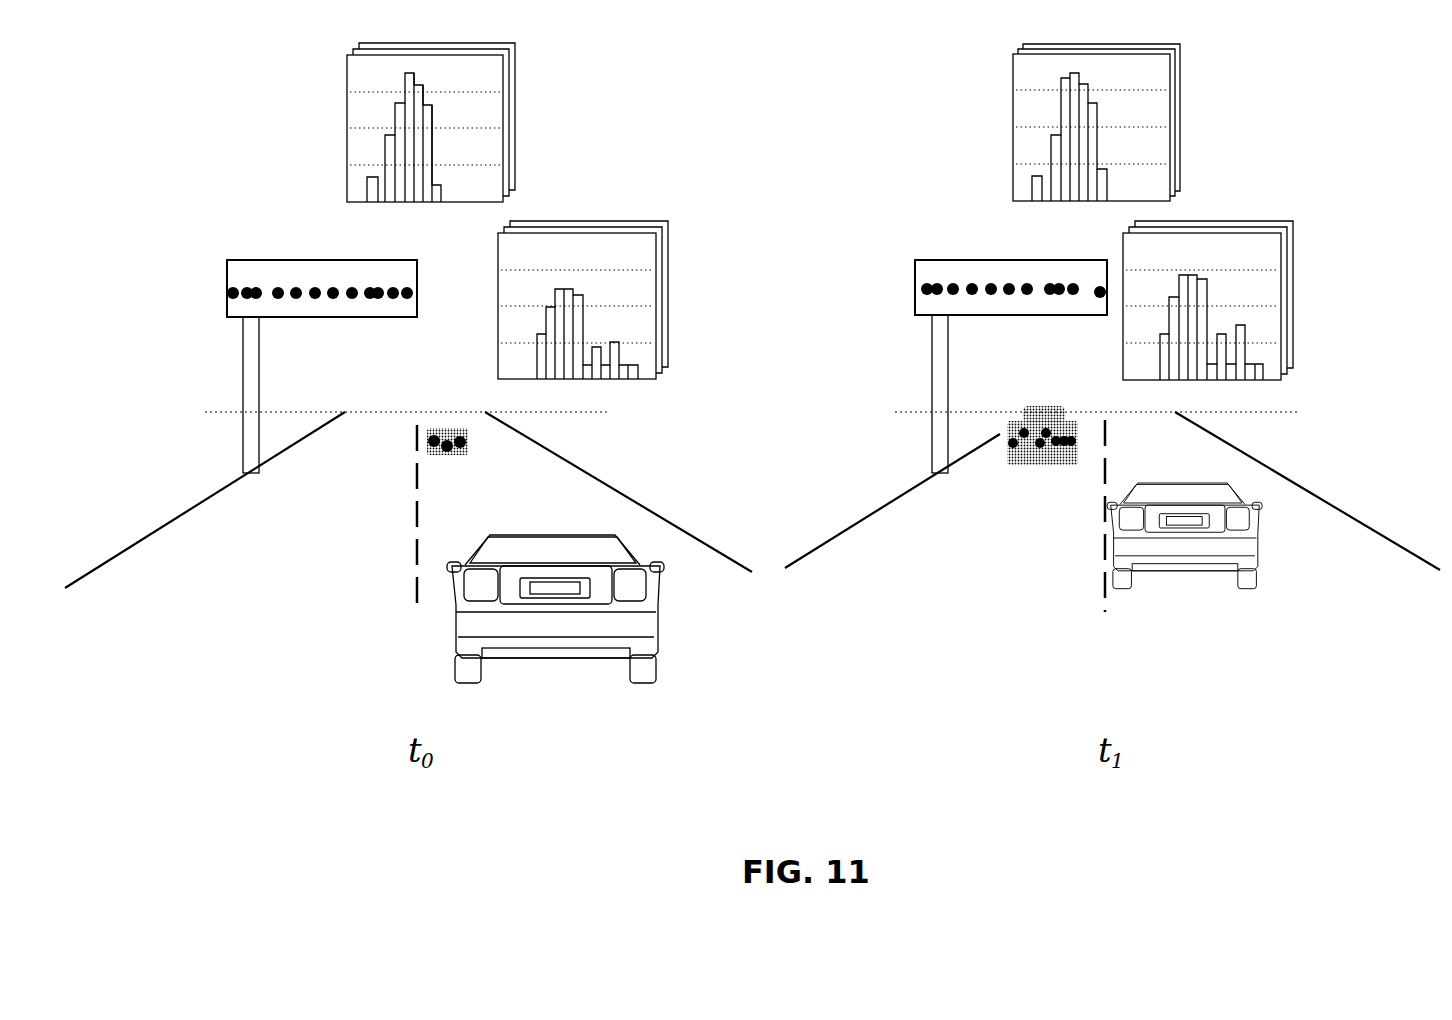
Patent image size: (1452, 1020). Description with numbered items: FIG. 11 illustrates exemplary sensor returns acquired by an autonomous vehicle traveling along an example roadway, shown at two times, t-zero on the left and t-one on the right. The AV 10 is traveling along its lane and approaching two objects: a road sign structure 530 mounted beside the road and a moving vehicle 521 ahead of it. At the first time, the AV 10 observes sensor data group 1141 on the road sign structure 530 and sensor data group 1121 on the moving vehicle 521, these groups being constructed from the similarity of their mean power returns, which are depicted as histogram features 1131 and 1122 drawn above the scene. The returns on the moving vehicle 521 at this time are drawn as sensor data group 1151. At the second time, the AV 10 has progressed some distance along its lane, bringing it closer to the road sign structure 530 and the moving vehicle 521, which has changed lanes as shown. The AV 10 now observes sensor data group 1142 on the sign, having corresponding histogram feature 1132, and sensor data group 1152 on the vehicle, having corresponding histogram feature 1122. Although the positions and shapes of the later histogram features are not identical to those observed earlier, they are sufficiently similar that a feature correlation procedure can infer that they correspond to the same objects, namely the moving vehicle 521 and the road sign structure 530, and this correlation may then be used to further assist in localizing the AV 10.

The AV 10 is at (569, 561).
The moving vehicle 521 is at (452, 456).
The road sign structure 530 is at (232, 262).
The sensor data group 1121 is at (474, 440).
The histogram feature 1122 is at (1085, 440).
The histogram feature 1131 is at (331, 271).
The histogram feature 1132 is at (1021, 271).
The sensor data group 1141 is at (280, 270).
The sensor data group 1142 is at (967, 270).
The sensor data group 1151 is at (418, 421).
The sensor data group 1152 is at (998, 428).